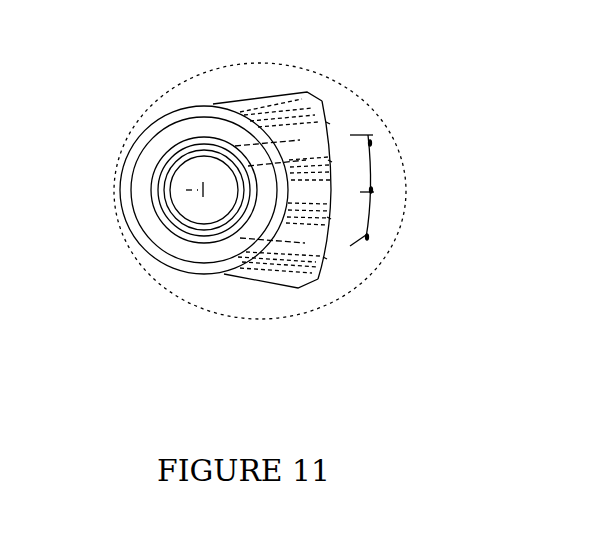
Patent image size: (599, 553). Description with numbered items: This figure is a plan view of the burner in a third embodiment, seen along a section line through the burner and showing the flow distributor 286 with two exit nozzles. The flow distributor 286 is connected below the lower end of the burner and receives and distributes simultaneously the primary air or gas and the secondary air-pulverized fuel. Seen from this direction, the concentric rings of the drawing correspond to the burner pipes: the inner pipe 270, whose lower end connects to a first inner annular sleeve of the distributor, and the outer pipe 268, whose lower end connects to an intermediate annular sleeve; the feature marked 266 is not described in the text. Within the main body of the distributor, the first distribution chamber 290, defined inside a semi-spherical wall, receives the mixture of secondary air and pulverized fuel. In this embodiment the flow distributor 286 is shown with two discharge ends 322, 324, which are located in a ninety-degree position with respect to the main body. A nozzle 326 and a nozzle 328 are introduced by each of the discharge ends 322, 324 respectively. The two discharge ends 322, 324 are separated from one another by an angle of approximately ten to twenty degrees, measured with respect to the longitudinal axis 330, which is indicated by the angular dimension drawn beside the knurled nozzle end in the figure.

The knob outer ring 266 is at (135, 140).
The outer pipe 268 is at (163, 230).
The inner pipe 270 is at (206, 156).
The flow distributor 286 is at (158, 97).
The first distribution chamber 290 is at (203, 207).
The discharge end 322 is at (291, 92).
The discharge end 324 is at (298, 292).
The nozzle 326 is at (331, 139).
The nozzle 328 is at (327, 248).
The longitudinal axis 330 is at (383, 192).